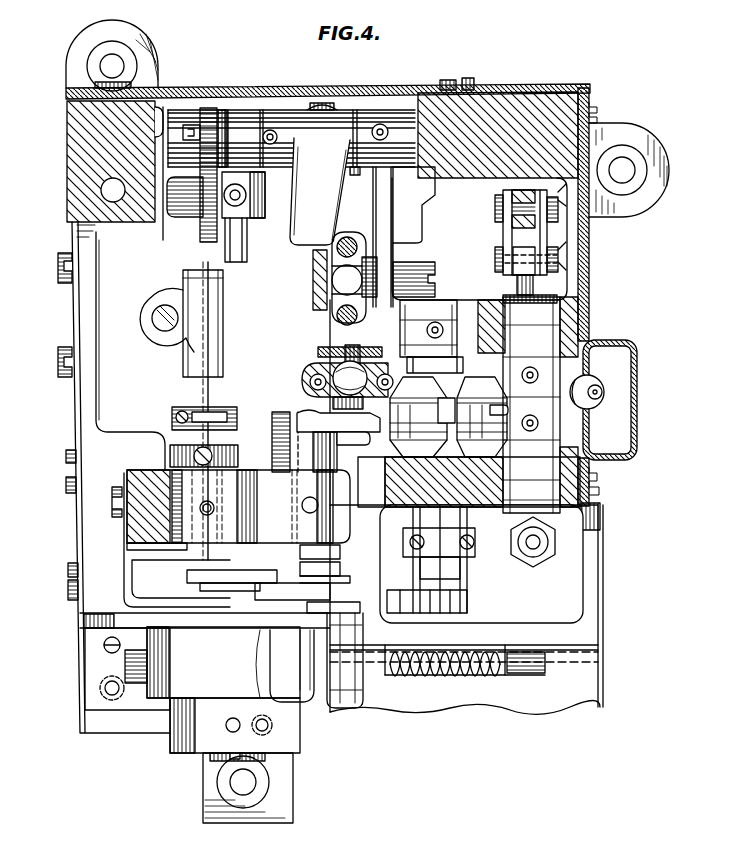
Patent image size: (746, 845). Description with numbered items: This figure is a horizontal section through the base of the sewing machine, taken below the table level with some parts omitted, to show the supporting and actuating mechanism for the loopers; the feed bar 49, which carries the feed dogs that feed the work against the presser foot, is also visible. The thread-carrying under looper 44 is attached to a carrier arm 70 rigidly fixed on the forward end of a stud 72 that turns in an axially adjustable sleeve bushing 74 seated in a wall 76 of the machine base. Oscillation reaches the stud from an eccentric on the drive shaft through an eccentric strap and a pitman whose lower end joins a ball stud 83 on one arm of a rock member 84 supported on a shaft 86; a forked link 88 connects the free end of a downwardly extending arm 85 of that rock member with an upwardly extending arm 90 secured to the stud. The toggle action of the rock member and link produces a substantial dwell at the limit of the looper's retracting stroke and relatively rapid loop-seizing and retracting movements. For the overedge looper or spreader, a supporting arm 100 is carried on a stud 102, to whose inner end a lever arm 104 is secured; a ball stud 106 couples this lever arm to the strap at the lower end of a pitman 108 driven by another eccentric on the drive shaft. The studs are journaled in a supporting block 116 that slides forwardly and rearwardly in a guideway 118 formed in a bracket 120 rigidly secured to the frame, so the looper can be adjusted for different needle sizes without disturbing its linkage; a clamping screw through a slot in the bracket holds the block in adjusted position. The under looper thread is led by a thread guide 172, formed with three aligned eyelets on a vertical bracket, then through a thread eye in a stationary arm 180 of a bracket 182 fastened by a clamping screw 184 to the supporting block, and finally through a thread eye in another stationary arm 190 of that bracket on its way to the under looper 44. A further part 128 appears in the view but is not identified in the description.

The under looper 44 is at (340, 612).
The feed bar 49 is at (312, 213).
The carrier arm 70 is at (470, 598).
The stud 72 is at (458, 562).
The sleeve bushing 74 is at (470, 520).
The wall 76 is at (412, 490).
The ball stud 83 is at (628, 408).
The rock member 84 is at (545, 375).
The downwardly extending arm 85 is at (545, 425).
The shaft 86 is at (565, 510).
The forked link 88 is at (400, 450).
The upwardly extending arm 90 is at (433, 403).
The supporting arm 100 is at (338, 572).
The stud 102 is at (338, 553).
The lever arm 104 is at (296, 432).
The ball stud 106 is at (340, 377).
The pitman 108 is at (305, 388).
The supporting block 116 is at (275, 520).
The guideway 118 is at (160, 468).
The bracket 120 is at (150, 480).
The bar 128 is at (200, 562).
The thread guide 172 is at (186, 292).
The stationary arm 180 is at (140, 556).
The bracket 182 is at (122, 540).
The clamping screw 184 is at (110, 495).
The stationary arm 190 is at (180, 610).